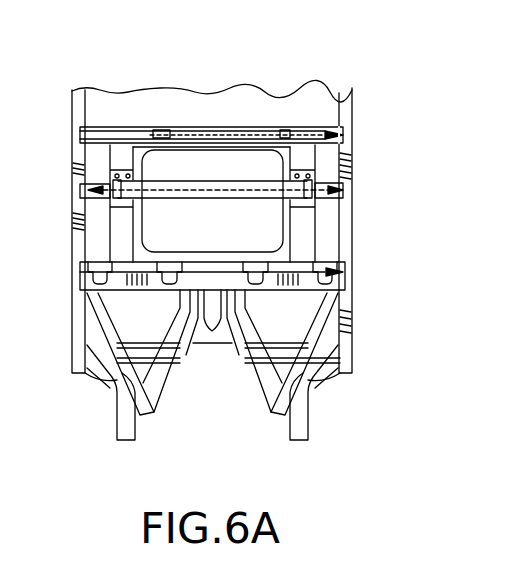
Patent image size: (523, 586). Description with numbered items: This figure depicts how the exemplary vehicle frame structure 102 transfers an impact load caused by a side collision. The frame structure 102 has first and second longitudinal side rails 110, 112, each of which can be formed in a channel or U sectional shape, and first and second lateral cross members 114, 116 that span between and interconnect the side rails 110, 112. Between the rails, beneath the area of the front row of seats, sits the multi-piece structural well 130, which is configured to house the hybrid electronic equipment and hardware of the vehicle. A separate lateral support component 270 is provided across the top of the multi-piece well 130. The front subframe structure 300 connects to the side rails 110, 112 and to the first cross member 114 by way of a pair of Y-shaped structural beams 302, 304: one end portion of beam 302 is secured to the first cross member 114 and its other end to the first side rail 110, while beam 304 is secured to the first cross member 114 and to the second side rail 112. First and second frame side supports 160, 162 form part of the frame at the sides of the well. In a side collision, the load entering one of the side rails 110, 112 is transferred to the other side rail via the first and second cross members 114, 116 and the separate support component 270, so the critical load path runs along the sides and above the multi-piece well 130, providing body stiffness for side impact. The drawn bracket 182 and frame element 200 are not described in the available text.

The vehicle frame structure 102 is at (77, 408).
The first side rail 110 is at (352, 260).
The second side rail 112 is at (72, 227).
The first cross member 114 is at (300, 290).
The second cross member 116 is at (262, 127).
The multi-piece well 130 is at (137, 88).
The first frame side support 160 is at (320, 225).
The second frame side support 162 is at (118, 160).
The right bracket 182 is at (323, 163).
The inner frame 200 is at (95, 237).
The separate support component 270 is at (212, 203).
The front subframe structure 300 is at (231, 404).
The Y-shaped structural beam 302 is at (313, 403).
The Y-shaped structural beam 304 is at (168, 390).